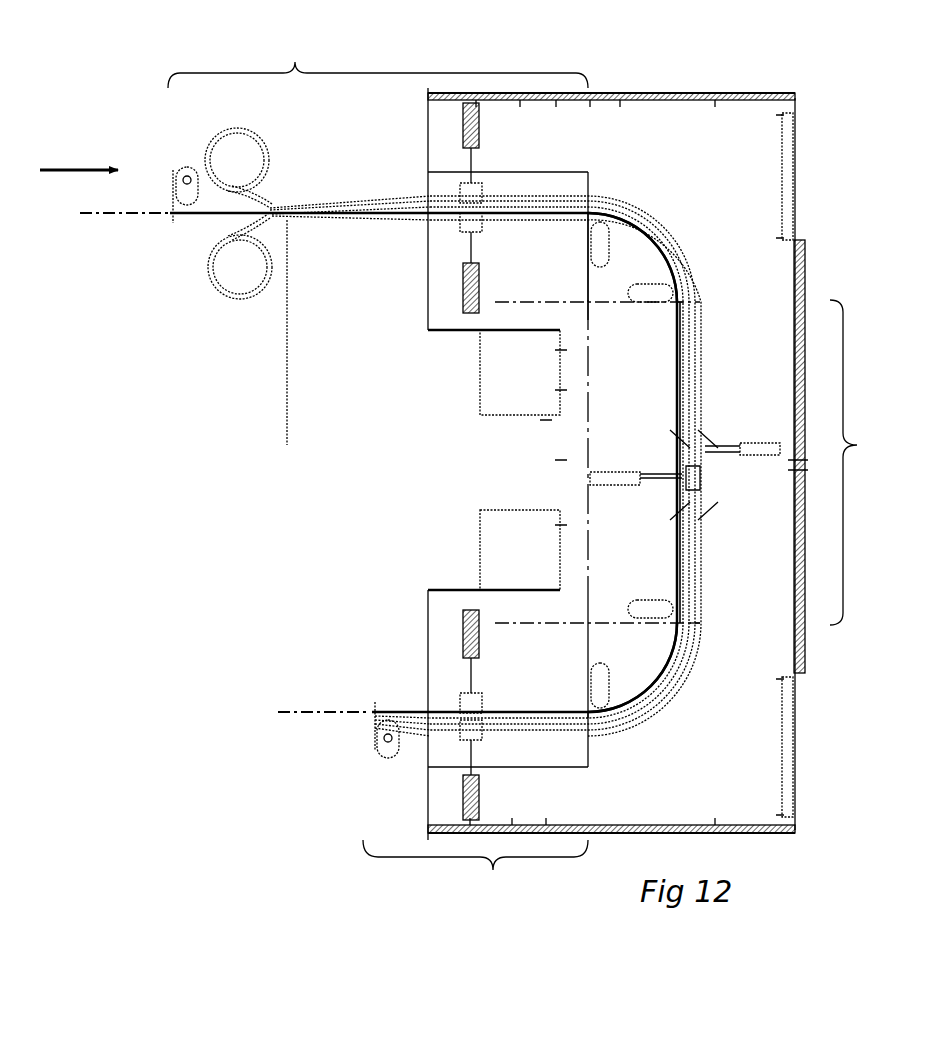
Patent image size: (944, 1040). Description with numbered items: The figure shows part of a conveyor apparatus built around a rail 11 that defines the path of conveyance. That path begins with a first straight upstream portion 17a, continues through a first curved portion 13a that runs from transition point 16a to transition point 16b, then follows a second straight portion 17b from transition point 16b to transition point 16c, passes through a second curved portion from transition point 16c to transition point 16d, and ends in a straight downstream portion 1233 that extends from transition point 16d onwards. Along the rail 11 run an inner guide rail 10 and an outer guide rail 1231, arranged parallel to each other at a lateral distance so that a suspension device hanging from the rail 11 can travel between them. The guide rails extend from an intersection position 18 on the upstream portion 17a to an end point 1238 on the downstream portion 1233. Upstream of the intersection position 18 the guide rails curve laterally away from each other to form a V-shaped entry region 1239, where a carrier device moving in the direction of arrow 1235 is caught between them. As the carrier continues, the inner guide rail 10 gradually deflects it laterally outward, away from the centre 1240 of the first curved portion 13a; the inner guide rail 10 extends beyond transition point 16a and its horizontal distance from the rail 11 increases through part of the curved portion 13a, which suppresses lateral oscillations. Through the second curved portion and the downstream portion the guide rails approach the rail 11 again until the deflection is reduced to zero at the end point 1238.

The inner guide rail 10 is at (310, 221).
The rail 11 is at (212, 210).
The first curved portion 13a is at (672, 215).
The transition point 16a is at (588, 216).
The transition point 16b is at (680, 304).
The transition point 16c is at (697, 625).
The transition point 16d is at (588, 713).
The first straight upstream portion 17a is at (378, 49).
The second straight portion 17b is at (867, 462).
The intersection position 18 is at (284, 347).
The outer guide rail 1231 is at (390, 195).
The straight downstream portion 1233 is at (475, 886).
The arrow 1235 is at (63, 167).
The end point 1238 is at (440, 710).
The V-shaped entry region 1239 is at (215, 228).
The centre of the first curved portion 1240 is at (590, 302).